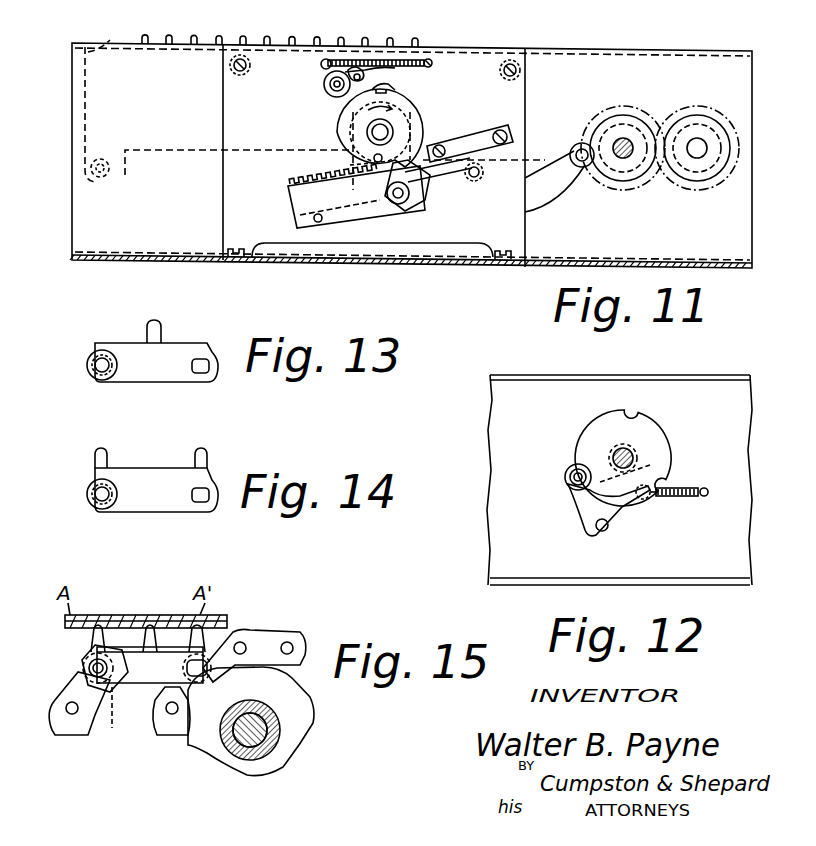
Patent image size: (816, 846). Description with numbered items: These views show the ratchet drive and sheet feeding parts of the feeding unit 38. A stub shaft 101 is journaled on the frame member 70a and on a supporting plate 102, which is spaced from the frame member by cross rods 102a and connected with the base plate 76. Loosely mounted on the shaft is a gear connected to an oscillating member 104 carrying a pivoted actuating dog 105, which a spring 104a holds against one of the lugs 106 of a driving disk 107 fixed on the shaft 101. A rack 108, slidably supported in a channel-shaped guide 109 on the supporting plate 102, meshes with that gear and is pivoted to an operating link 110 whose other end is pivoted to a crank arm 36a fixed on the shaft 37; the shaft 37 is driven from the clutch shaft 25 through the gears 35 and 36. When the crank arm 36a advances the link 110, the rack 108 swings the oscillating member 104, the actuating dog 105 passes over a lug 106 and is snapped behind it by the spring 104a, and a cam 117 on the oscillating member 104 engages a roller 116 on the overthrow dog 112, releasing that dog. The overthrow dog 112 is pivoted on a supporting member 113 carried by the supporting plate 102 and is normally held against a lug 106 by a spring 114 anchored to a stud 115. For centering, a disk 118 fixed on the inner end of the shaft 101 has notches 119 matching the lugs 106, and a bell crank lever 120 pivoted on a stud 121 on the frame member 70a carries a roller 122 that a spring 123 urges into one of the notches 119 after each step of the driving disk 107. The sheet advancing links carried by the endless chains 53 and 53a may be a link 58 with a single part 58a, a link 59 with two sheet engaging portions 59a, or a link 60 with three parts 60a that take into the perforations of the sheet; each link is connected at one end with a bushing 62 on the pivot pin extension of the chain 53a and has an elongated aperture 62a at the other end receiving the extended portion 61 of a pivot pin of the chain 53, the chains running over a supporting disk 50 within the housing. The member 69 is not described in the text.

In FIG. 11, the feeding unit 38 is at (88, 52).
In FIG. 11, the cross rods 102a is at (244, 58).
In FIG. 11, the supporting plate 102 is at (222, 248).
In FIG. 11, the frame member 70a is at (72, 122).
In FIG. 12, the frame member 70a is at (497, 440).
In FIG. 11, the pivot pin 69 is at (110, 170).
In FIG. 11, the base plate 76 is at (422, 266).
In FIG. 11, the overthrow dog 112 is at (330, 74).
In FIG. 11, the supporting member 113 is at (325, 88).
In FIG. 11, the spring 114 is at (414, 60).
In FIG. 11, the stud 115 is at (432, 60).
In FIG. 11, the roller 116 is at (362, 60).
In FIG. 11, the cam 117 is at (372, 70).
In FIG. 11, the driving disk 107 is at (340, 122).
In FIG. 11, the lugs 106 is at (398, 92).
In FIG. 11, the stub shaft 101 is at (385, 132).
In FIG. 12, the stub shaft 101 is at (616, 452).
In FIG. 11, the oscillating member 104 is at (428, 140).
In FIG. 11, the spring 104a is at (350, 165).
In FIG. 11, the rack 108 is at (290, 186).
In FIG. 11, the channel-shaped guide 109 is at (392, 202).
In FIG. 11, the actuating dog 105 is at (420, 195).
In FIG. 11, the gear 36 is at (640, 110).
In FIG. 11, the crank arm 36a is at (580, 145).
In FIG. 11, the shaft 37 is at (620, 136).
In FIG. 11, the shaft 25 is at (700, 138).
In FIG. 11, the gear 35 is at (700, 186).
In FIG. 11, the operating link 110 is at (563, 188).
In FIG. 12, the disk 118 is at (665, 445).
In FIG. 12, the notches 119 is at (632, 414).
In FIG. 12, the bell crank lever 120 is at (582, 500).
In FIG. 12, the stud 121 is at (604, 532).
In FIG. 12, the roller 122 is at (565, 477).
In FIG. 12, the spring 123 is at (668, 498).
In FIG. 13, the link 58 is at (125, 378).
In FIG. 13, the single part 58a is at (150, 330).
In FIG. 14, the link 59 is at (145, 500).
In FIG. 14, the sheet engaging portions 59a is at (196, 455).
In FIG. 13, the bushing 62 is at (92, 370).
In FIG. 14, the bushing 62 is at (92, 505).
In FIG. 15, the bushing 62 is at (112, 728).
In FIG. 13, the elongated aperture 62a is at (198, 373).
In FIG. 14, the elongated aperture 62a is at (198, 503).
In FIG. 15, the elongated aperture 62a is at (205, 665).
In FIG. 15, the link 60 is at (142, 678).
In FIG. 15, the sheet engaging parts 60a is at (150, 630).
In FIG. 15, the extended portions of pivot pins 61 is at (200, 685).
In FIG. 15, the endless chain 53 is at (280, 632).
In FIG. 15, the endless chain 53a is at (83, 670).
In FIG. 15, the supporting disk 50 is at (307, 712).